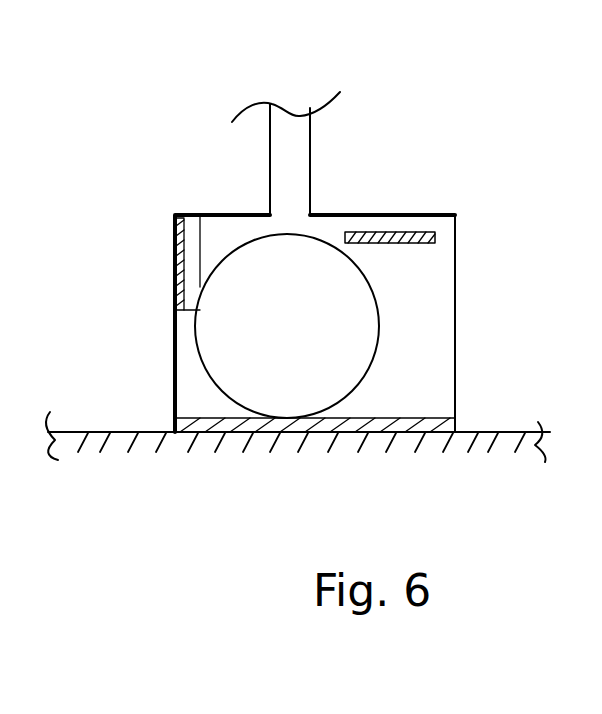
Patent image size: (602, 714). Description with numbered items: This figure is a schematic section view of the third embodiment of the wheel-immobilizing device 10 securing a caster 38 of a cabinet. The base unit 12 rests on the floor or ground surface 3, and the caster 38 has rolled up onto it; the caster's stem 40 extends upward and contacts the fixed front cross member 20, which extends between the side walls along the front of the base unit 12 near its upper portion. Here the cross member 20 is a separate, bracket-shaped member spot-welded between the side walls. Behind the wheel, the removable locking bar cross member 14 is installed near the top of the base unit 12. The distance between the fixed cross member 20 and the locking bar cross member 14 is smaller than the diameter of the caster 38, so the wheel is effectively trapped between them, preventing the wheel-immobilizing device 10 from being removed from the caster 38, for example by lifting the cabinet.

The wheel-immobilizing device 10 is at (484, 95).
The base unit 12 is at (143, 398).
The locking bar cross member 14 is at (402, 247).
The cross member 20 is at (172, 245).
The caster 38 is at (360, 347).
The stem 40 is at (296, 162).
The supporting surface 3 is at (516, 430).